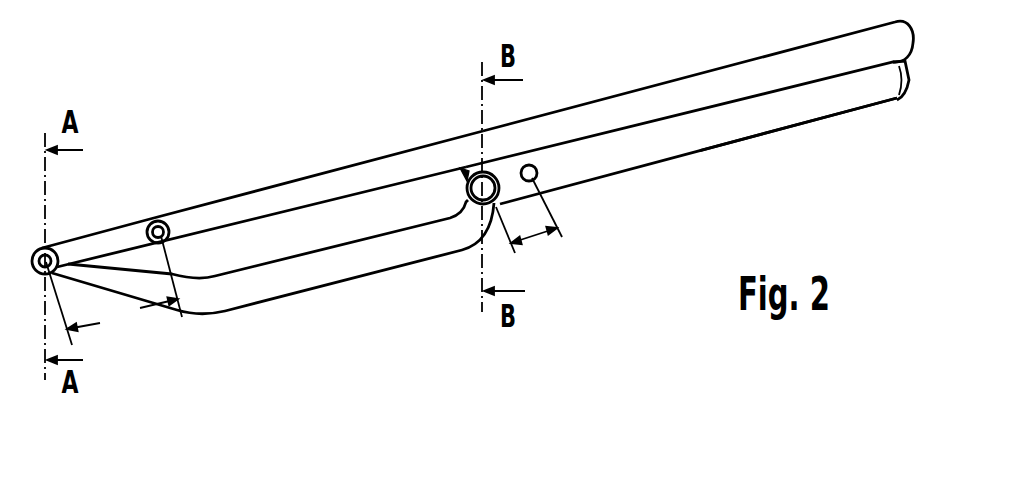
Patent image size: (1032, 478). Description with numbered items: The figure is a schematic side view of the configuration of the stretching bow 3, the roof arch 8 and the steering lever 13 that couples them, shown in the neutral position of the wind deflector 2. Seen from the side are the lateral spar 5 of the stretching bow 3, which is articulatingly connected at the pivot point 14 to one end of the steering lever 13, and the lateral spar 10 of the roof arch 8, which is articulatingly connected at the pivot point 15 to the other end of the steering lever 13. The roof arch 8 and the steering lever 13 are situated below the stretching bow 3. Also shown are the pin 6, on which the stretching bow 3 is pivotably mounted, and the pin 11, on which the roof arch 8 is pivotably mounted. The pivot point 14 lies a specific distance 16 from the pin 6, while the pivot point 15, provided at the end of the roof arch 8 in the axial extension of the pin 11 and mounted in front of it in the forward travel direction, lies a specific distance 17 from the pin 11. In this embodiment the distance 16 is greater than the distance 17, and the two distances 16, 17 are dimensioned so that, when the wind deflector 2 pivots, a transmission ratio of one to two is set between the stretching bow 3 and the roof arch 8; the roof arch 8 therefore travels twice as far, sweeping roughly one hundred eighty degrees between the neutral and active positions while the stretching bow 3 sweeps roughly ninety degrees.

The wind deflector 2 is at (382, 93).
The stretching bow 3 is at (653, 74).
The lateral spar 5 is at (312, 190).
The pin 6 is at (165, 216).
The roof arch 8 is at (804, 132).
The lateral spar 10 is at (718, 130).
The pin 11 is at (537, 170).
The steering lever 13 is at (333, 275).
The pivot point 14 is at (60, 248).
The pivot point 15 is at (462, 173).
The distance 16 is at (114, 290).
The distance 17 is at (536, 238).